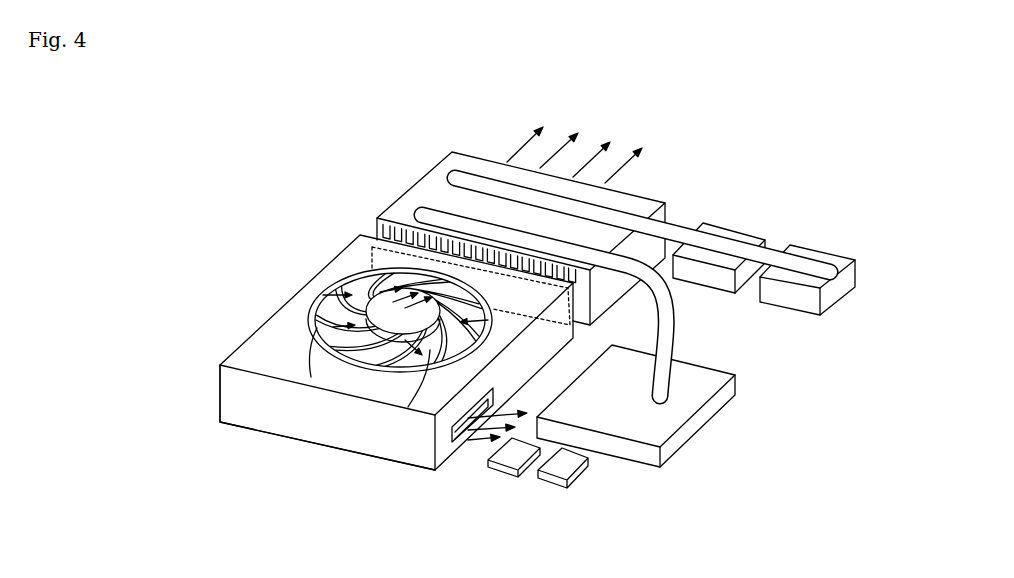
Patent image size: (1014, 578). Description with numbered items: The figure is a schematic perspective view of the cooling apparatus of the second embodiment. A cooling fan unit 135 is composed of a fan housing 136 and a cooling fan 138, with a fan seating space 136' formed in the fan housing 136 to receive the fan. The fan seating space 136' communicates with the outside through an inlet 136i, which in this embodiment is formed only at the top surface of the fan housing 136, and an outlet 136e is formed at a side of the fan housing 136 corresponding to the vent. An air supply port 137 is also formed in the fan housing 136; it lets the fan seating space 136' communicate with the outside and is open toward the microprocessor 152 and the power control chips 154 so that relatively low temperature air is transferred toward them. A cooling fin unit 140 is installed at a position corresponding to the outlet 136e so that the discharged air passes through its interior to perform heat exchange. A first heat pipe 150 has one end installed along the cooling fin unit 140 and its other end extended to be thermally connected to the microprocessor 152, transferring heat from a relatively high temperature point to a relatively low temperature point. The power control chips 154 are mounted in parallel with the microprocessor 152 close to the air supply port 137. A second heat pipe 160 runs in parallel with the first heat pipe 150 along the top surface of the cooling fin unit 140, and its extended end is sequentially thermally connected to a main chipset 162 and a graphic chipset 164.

The cooling fan unit 135 is at (223, 442).
The fan housing 136 is at (396, 377).
The fan seating space 136' is at (355, 322).
The outlet 136e is at (385, 262).
The inlet 136i is at (363, 370).
The air supply port 137 is at (462, 447).
The cooling fan 138 is at (330, 325).
The cooling fin unit 140 is at (403, 208).
The first heat pipe 150 is at (433, 213).
The microprocessor 152 is at (683, 412).
The power control chips 154 is at (555, 470).
The second heat pipe 160 is at (470, 176).
The main chipset 162 is at (728, 232).
The graphic chipset 164 is at (818, 250).